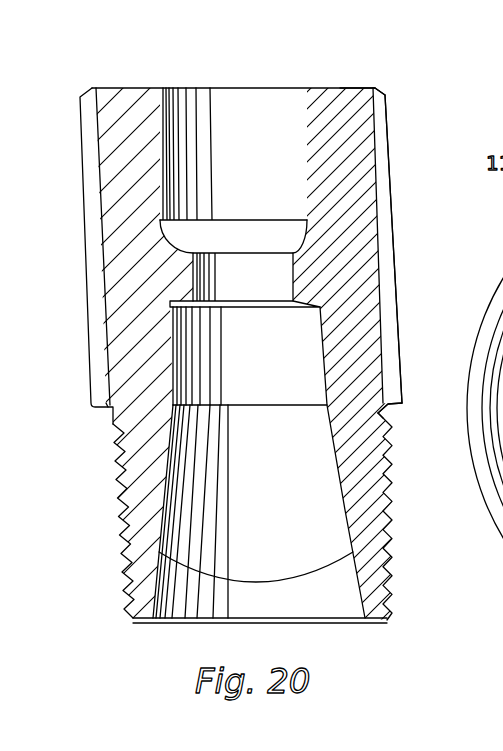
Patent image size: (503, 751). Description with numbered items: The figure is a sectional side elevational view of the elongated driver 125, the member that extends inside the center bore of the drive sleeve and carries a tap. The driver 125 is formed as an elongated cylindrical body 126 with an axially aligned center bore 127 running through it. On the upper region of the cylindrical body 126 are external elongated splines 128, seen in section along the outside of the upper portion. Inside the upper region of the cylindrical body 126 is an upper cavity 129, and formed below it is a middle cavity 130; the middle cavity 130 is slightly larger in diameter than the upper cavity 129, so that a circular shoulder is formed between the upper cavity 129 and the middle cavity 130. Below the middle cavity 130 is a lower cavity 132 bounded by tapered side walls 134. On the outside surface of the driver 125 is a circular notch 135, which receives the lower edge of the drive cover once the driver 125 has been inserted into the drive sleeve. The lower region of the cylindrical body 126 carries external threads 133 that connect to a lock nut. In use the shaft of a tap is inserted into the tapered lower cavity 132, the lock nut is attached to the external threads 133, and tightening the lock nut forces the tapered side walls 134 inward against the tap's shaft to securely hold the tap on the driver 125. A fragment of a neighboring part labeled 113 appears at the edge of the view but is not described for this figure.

The driver 125 is at (138, 80).
The cylindrical body 126 is at (380, 87).
The center bore 127 is at (254, 87).
The external elongated splines 128 is at (394, 214).
The upper cavity 129 is at (274, 170).
The middle cavity 130 is at (282, 397).
The lower cavity 132 is at (300, 537).
The external threads 133 is at (390, 548).
The tapered side walls 134 is at (256, 574).
The circular notch 135 is at (388, 410).
The ring member 113 is at (502, 370).